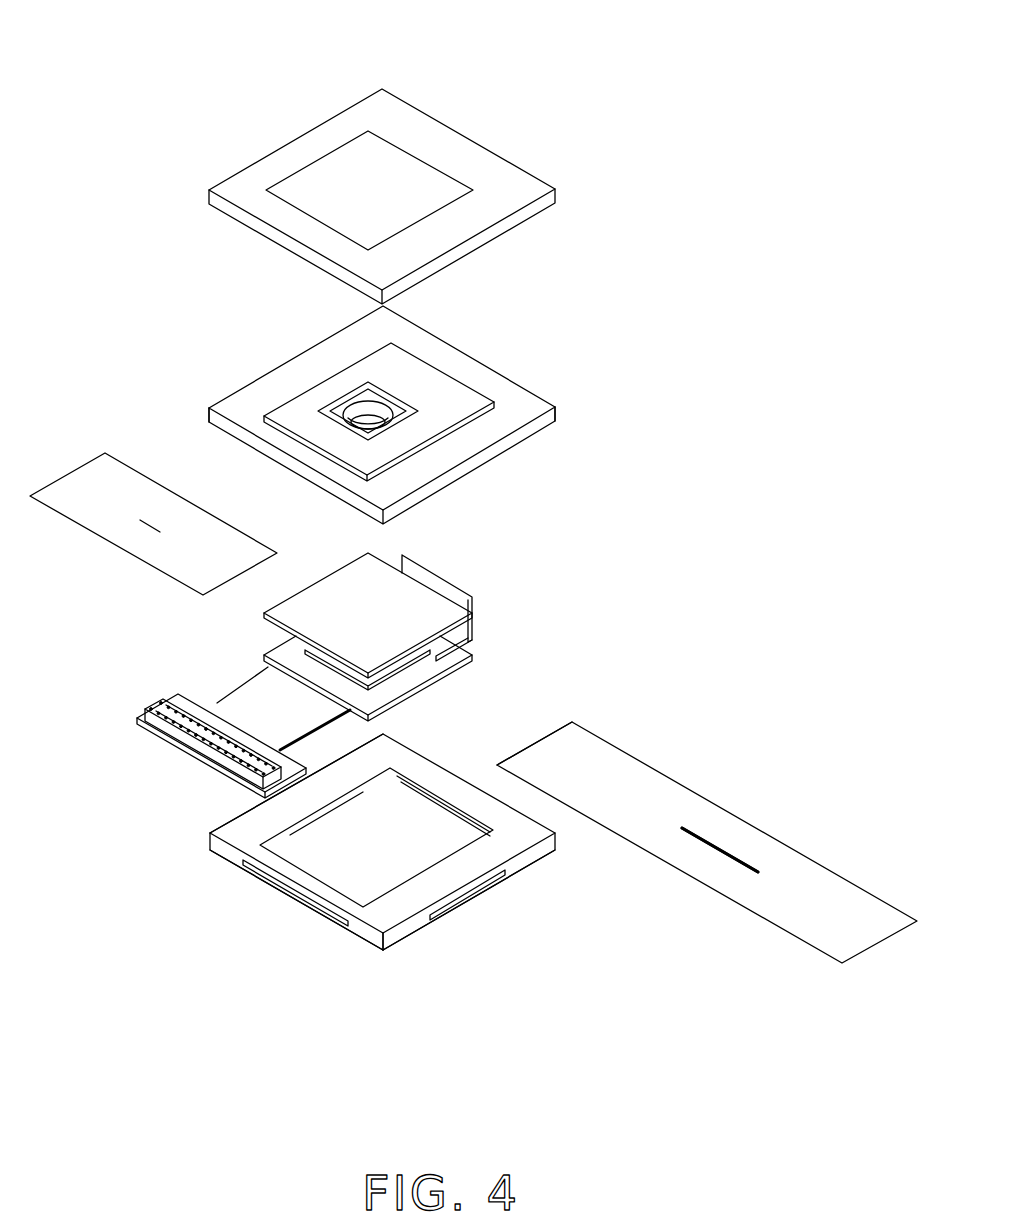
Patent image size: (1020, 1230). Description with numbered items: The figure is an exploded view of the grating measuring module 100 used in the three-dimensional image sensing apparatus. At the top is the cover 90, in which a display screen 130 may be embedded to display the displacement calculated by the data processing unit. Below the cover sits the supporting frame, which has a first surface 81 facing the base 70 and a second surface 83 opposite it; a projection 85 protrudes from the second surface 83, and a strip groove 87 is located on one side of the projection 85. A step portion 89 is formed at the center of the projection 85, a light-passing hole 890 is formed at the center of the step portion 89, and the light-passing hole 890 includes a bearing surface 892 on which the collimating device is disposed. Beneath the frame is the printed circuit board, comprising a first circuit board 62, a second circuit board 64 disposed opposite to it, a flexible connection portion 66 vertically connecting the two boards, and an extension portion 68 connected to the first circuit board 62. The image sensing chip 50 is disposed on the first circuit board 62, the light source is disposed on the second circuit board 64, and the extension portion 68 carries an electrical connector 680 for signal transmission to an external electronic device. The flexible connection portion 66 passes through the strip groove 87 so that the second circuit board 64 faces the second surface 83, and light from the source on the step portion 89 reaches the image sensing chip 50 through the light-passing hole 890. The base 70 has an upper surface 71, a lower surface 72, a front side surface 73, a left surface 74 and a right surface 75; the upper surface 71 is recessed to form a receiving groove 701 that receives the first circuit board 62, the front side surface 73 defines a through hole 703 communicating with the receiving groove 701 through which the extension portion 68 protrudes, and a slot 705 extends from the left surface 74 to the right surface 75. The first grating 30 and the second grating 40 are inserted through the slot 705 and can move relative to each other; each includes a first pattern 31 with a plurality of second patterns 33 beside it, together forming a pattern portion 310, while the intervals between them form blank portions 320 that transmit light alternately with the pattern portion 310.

The grating measuring module 100 is at (496, 39).
The cover 90 is at (492, 180).
The display screen 130 is at (395, 185).
The second surface 83 is at (497, 387).
The first surface 81 is at (518, 453).
The projection 85 is at (287, 407).
The strip groove 87 is at (437, 378).
The step portion 89 is at (338, 403).
The light-passing hole 890 is at (372, 406).
The bearing surface 892 is at (367, 424).
The second grating 40 is at (103, 463).
The pattern portion 310 is at (153, 525).
The second circuit board 64 is at (420, 603).
The flexible connection portion 66 is at (473, 600).
The first circuit board 62 is at (455, 655).
The image sensing chip 50 is at (308, 650).
The extension portion 68 is at (258, 693).
The electrical connector 680 is at (170, 712).
The base 70 is at (203, 855).
The upper surface 71 is at (403, 758).
The receiving groove 701 is at (297, 852).
The left surface 74 is at (240, 810).
The through hole 703 is at (287, 888).
The front side surface 73 is at (367, 930).
The right surface 75 is at (403, 928).
The lower surface 72 is at (450, 917).
The slot 705 is at (490, 883).
The first grating 30 is at (838, 890).
The blank portion 320 is at (623, 760).
The first pattern 31 is at (707, 840).
The second pattern 33 is at (752, 868).